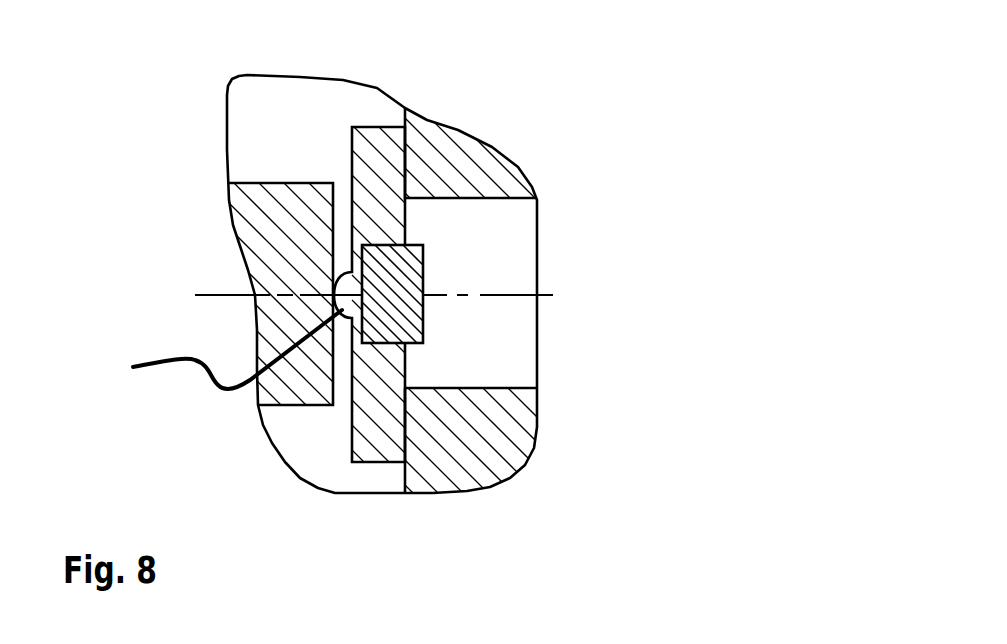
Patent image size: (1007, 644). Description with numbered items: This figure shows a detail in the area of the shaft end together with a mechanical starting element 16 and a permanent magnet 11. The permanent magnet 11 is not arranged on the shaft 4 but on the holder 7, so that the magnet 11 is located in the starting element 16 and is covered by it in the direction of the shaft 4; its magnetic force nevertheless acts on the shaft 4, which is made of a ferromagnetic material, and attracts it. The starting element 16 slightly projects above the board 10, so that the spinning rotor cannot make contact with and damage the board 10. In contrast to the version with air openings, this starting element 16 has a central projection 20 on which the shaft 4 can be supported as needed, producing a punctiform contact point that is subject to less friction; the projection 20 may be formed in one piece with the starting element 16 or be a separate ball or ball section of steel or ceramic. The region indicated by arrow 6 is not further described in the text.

The housing 10 is at (340, 108).
The bearing 7 is at (425, 145).
The shaft 4 is at (236, 221).
The magnet 11 is at (423, 272).
The sensor carrier 16 is at (352, 437).
The signal line 20 is at (211, 355).
The housing section 6 is at (530, 458).